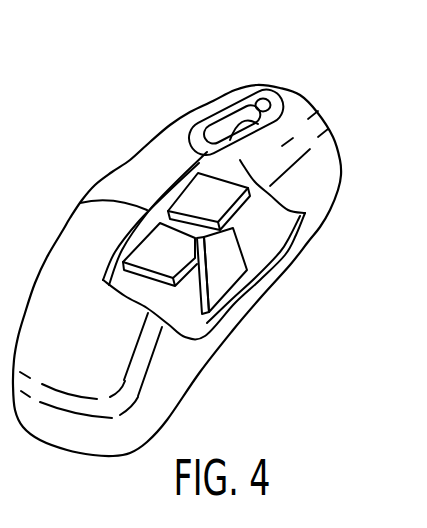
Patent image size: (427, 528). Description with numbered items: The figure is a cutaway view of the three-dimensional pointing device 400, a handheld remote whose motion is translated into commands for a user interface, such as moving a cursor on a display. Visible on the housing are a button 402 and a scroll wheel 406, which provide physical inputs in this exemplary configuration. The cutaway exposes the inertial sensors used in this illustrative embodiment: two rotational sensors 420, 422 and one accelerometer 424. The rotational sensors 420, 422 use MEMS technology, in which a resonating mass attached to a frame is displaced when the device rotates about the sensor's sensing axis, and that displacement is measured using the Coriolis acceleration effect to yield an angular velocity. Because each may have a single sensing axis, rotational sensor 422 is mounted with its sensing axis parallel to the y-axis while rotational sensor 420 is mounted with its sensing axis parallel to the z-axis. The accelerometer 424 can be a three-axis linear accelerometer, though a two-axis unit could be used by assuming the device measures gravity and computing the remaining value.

The 3D pointing device 400 is at (104, 70).
The button 402 is at (140, 160).
The scroll wheel 406 is at (232, 128).
The rotational sensor 420 is at (220, 192).
The rotational sensor 422 is at (218, 279).
The accelerometer 424 is at (150, 255).